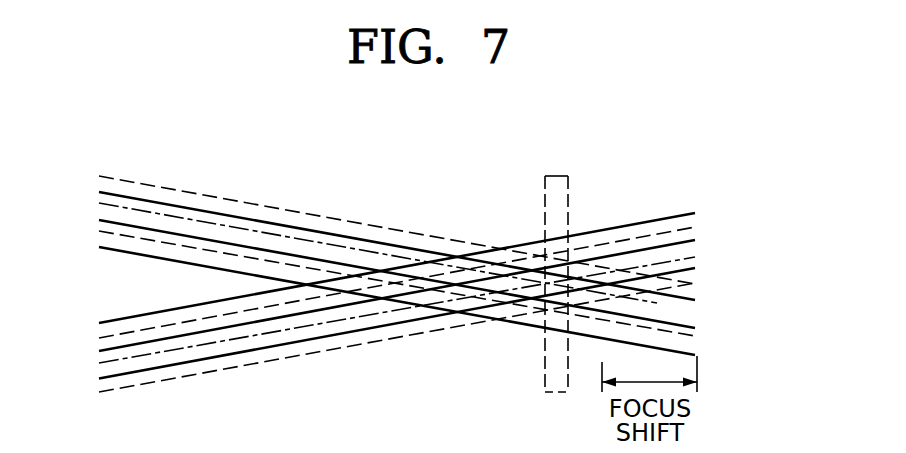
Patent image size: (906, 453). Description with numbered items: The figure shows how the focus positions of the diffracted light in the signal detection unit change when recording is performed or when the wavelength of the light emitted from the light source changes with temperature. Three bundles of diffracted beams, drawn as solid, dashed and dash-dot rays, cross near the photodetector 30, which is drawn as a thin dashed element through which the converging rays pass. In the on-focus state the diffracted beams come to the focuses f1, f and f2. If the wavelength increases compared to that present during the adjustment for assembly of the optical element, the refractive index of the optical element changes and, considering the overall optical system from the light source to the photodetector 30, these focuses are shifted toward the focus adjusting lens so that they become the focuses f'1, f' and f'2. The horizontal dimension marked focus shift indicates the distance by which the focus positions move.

The photodetector 30 is at (559, 176).
The focus f is at (397, 293).
The shifted focus f' is at (397, 320).
The focus f1 is at (401, 283).
The shifted focus f'1 is at (397, 314).
The focus f2 is at (684, 284).
The shifted focus f'2 is at (397, 275).